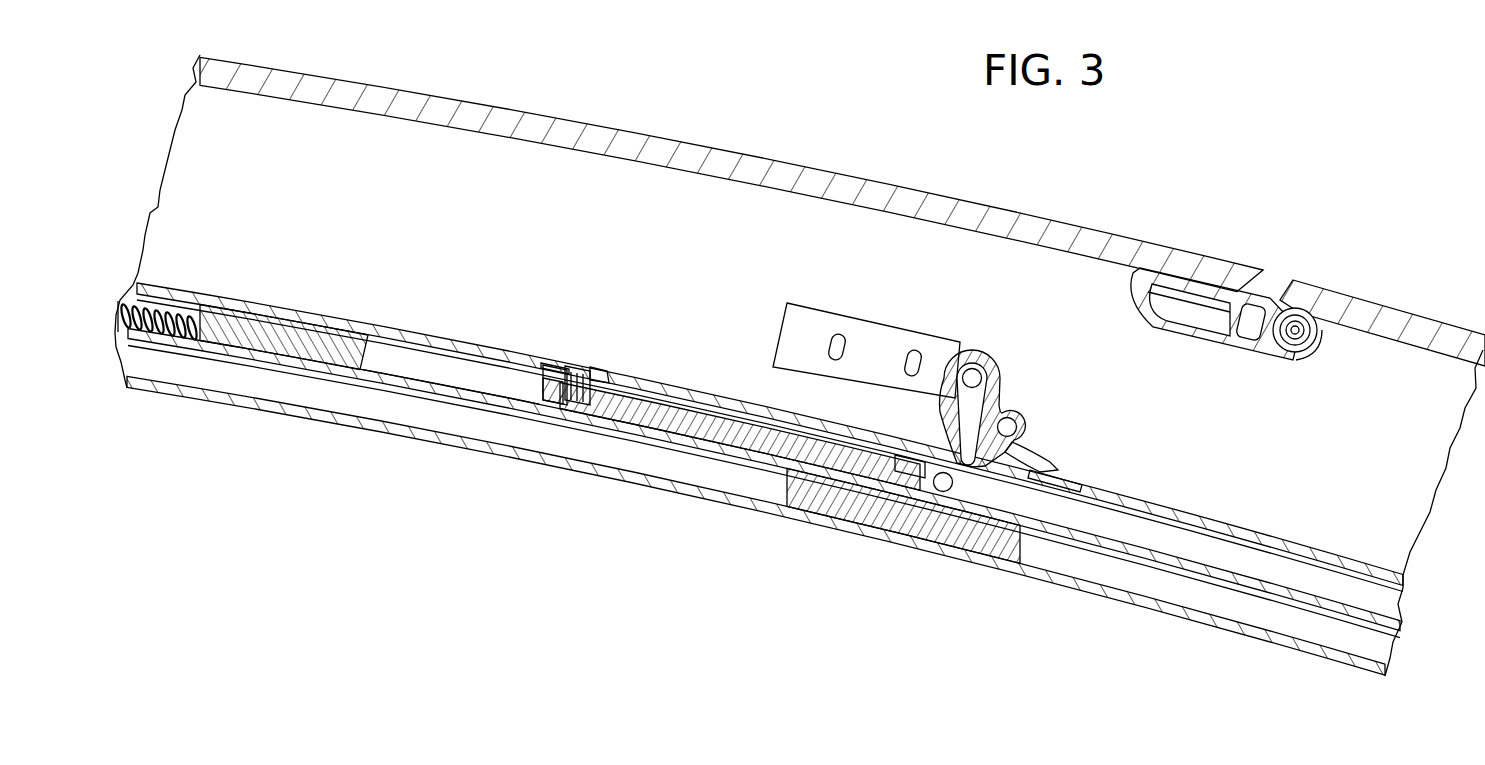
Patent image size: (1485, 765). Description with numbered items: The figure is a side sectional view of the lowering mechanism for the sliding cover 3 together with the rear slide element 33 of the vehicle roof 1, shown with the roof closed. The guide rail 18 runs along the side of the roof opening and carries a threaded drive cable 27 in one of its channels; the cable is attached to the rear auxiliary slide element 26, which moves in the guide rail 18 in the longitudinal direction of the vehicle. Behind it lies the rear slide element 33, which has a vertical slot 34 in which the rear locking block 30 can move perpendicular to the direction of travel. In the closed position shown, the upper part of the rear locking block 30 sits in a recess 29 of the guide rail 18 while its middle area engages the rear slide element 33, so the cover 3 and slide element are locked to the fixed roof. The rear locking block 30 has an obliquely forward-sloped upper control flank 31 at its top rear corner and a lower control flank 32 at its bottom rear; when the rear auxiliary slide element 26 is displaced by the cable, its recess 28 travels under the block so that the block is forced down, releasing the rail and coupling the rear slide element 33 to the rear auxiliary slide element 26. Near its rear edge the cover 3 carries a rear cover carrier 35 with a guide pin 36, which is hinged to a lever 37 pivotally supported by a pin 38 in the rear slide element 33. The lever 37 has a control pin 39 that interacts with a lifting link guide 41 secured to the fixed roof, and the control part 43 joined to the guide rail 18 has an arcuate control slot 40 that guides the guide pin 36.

The vehicle roof 1 is at (1356, 280).
The sliding cover 3 is at (668, 150).
The guide rail 18 is at (1143, 555).
The rear auxiliary slide element 26 is at (285, 352).
The drive cable 27 is at (165, 335).
The recess 28 is at (385, 374).
The recess 29 is at (553, 366).
The rear locking block 30 is at (576, 368).
The upper control flank 31 is at (594, 368).
The lower control flank 32 is at (580, 406).
The rear slide element 33 is at (825, 472).
The slot 34 is at (548, 402).
The rear cover carrier 35 is at (800, 330).
The guide pin 36 is at (975, 369).
The lever 37 is at (935, 395).
The pin 38 is at (943, 492).
The control pin 39 is at (1017, 426).
The control slot 40 is at (905, 468).
The lifting link guide 41 is at (1048, 463).
The control part 43 is at (1070, 483).